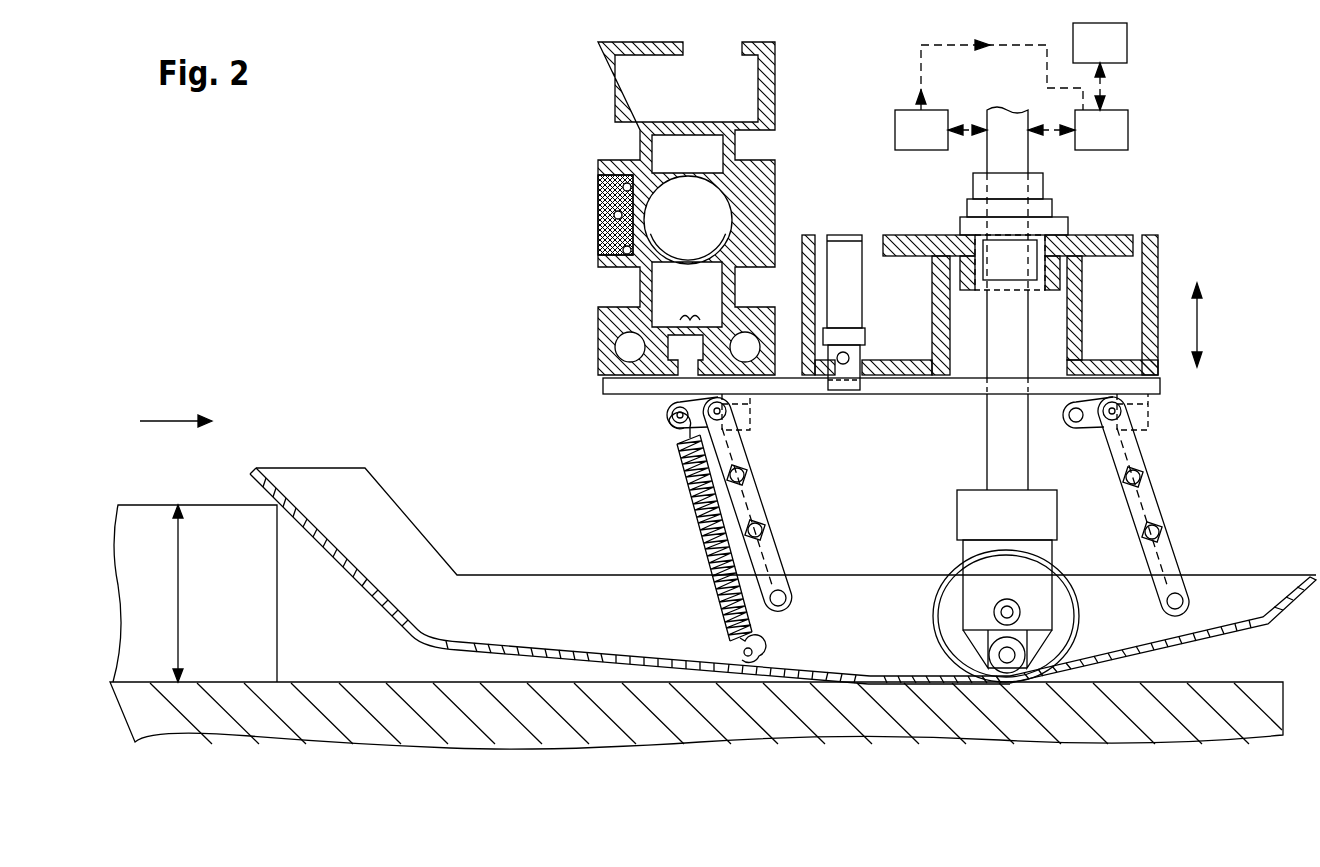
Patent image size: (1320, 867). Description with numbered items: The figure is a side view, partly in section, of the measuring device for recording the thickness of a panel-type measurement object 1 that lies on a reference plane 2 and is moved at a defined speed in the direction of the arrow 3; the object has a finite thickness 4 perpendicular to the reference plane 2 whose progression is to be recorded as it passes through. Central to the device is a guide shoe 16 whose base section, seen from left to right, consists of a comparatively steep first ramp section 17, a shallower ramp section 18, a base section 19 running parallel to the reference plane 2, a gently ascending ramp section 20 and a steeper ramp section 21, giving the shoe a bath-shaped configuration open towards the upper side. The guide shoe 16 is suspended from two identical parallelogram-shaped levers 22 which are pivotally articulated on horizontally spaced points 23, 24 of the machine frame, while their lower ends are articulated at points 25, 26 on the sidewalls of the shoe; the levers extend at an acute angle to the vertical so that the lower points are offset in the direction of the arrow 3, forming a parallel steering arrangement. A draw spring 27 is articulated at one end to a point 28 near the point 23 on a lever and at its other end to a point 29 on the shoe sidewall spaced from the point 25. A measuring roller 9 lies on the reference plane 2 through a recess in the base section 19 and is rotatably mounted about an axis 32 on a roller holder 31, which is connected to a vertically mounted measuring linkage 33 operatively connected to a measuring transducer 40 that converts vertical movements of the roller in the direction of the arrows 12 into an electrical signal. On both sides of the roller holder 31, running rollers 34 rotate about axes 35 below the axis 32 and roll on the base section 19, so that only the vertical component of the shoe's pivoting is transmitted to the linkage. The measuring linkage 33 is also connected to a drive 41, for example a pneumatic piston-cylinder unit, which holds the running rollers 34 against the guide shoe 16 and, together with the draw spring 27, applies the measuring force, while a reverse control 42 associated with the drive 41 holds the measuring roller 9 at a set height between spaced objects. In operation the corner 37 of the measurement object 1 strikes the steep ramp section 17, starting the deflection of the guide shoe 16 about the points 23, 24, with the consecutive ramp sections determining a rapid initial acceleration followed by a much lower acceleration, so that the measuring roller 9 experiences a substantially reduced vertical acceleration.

The measurement object 1 is at (252, 512).
The reference plane 2 is at (350, 680).
The arrow 3 is at (163, 418).
The thickness 4 is at (182, 604).
The measuring roller 9 is at (1063, 606).
The arrows 12 is at (1205, 330).
The guide shoe 16 is at (563, 514).
The first ramp section 17 is at (365, 564).
The ramp section 18 is at (614, 646).
The base section 19 is at (868, 672).
The ramp section 20 is at (1125, 652).
The ramp section 21 is at (514, 592).
The parallelogram-shaped levers 22 is at (740, 440).
The point 23 is at (727, 411).
The point 24 is at (1122, 411).
The point 25 is at (787, 598).
The point 26 is at (1177, 594).
The draw spring 27 is at (688, 474).
The point 28 is at (672, 415).
The point 29 is at (748, 660).
The roller holder 31 is at (962, 505).
The axis 32 is at (995, 604).
The measuring linkage 33 is at (1000, 432).
The running rollers 34 is at (1003, 662).
The axes 35 is at (1010, 660).
The corner 37 is at (285, 488).
The measuring transducer 40 is at (893, 128).
The drive 41 is at (1130, 128).
The reverse control 42 is at (1129, 43).